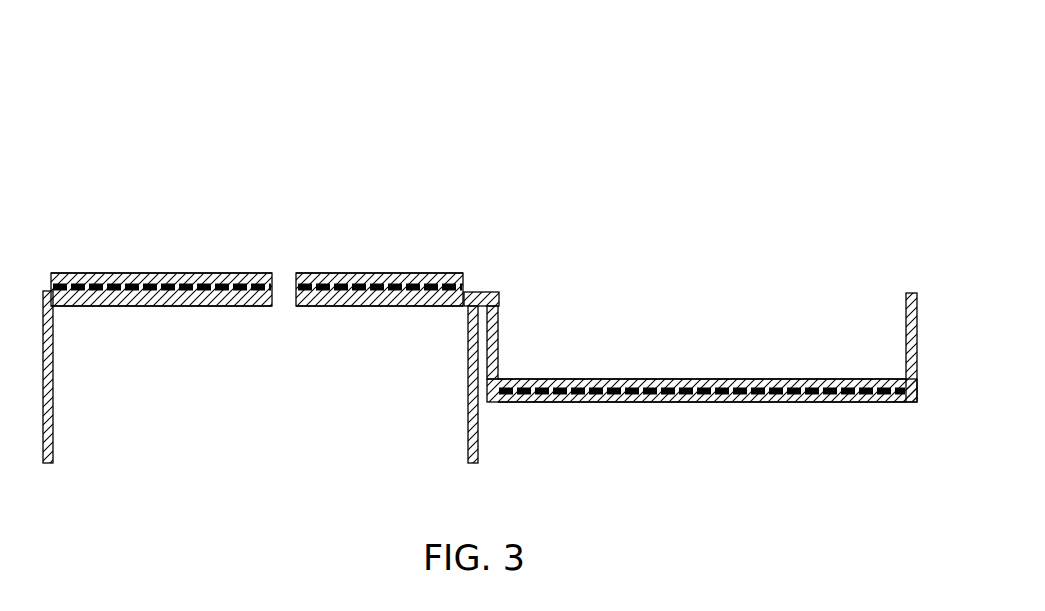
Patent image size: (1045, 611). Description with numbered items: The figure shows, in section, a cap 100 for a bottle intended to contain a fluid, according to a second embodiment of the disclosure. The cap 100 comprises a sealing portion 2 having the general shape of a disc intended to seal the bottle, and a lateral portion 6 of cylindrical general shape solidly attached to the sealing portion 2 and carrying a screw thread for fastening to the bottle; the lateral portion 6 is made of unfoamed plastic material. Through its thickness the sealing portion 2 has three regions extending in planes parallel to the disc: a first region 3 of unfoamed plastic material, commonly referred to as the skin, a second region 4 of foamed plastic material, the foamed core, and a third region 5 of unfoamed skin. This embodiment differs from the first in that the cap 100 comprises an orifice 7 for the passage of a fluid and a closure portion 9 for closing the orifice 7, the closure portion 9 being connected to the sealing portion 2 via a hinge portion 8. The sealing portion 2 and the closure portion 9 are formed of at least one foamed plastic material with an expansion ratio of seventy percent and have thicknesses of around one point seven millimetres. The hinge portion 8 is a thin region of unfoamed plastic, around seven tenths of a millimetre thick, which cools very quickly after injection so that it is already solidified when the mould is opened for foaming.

The cap 100 is at (818, 202).
The sealing portion 2 is at (129, 255).
The first region 3 is at (228, 273).
The second region 4 is at (320, 274).
The third region 5 is at (423, 273).
The lateral portion 6 is at (53, 377).
The orifice 7 is at (293, 258).
The hinge portion 8 is at (484, 292).
The closure portion 9 is at (703, 408).